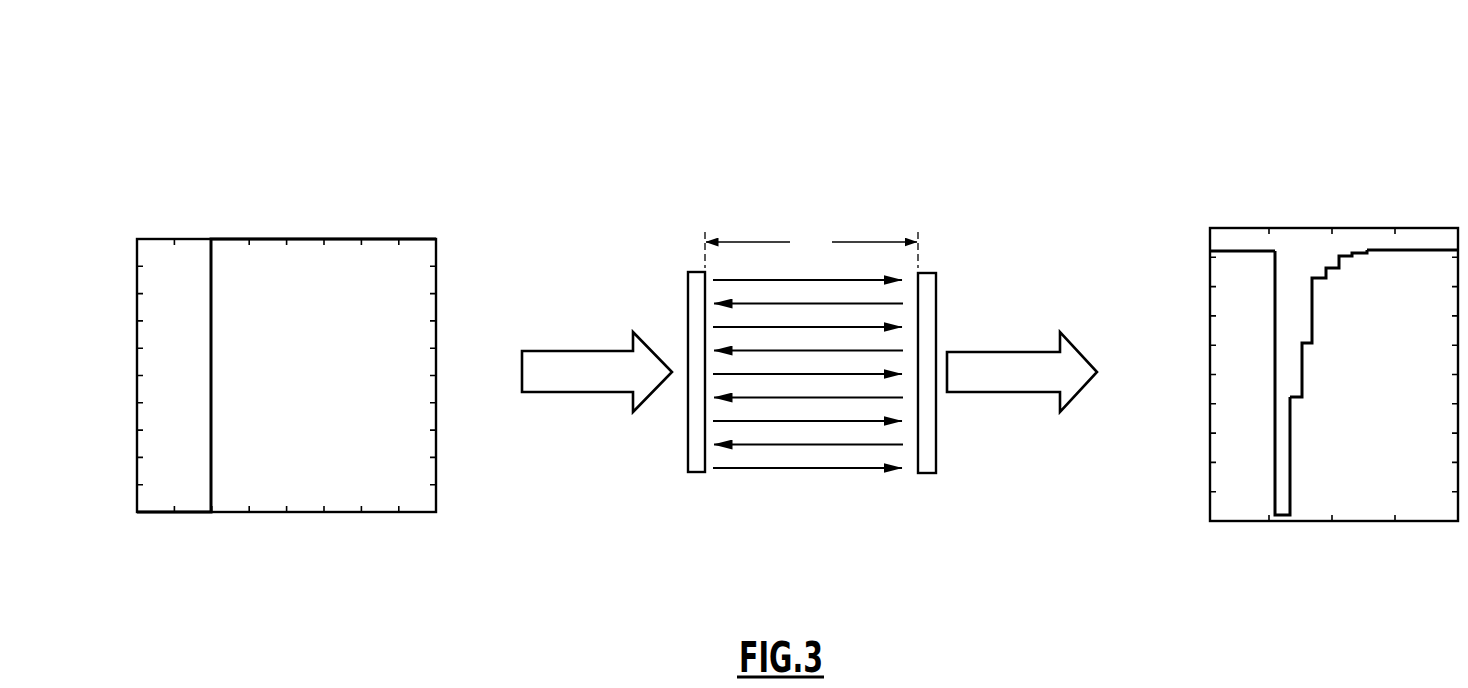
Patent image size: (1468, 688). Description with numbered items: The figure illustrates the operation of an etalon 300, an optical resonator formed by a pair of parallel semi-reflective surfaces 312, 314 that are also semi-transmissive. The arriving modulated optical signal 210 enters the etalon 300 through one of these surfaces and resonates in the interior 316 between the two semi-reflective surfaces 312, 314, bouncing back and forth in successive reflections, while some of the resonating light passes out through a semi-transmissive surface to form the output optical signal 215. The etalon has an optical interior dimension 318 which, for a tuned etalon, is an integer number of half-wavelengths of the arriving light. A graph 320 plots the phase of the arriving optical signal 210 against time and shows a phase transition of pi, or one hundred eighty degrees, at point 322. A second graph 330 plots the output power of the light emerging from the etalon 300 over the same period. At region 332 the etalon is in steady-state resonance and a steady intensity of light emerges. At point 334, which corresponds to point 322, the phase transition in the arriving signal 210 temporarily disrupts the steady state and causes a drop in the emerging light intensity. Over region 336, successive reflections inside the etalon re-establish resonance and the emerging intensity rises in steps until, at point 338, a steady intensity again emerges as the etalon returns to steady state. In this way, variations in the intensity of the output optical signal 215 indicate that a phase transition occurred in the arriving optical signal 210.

The etalon 300 is at (806, 332).
The arriving modulated optical signal 210 is at (573, 350).
The output optical signal 215 is at (987, 351).
The semi-reflective surface 312 is at (686, 307).
The semi-reflective surface 314 is at (938, 309).
The interior 316 is at (812, 482).
The optical interior dimension 318 is at (811, 247).
The graph 320 is at (262, 346).
The point 322 is at (210, 234).
The graph 330 is at (1314, 341).
The region 332 is at (1236, 240).
The point 334 is at (1278, 270).
The region 336 is at (1302, 378).
The point 338 is at (1410, 253).